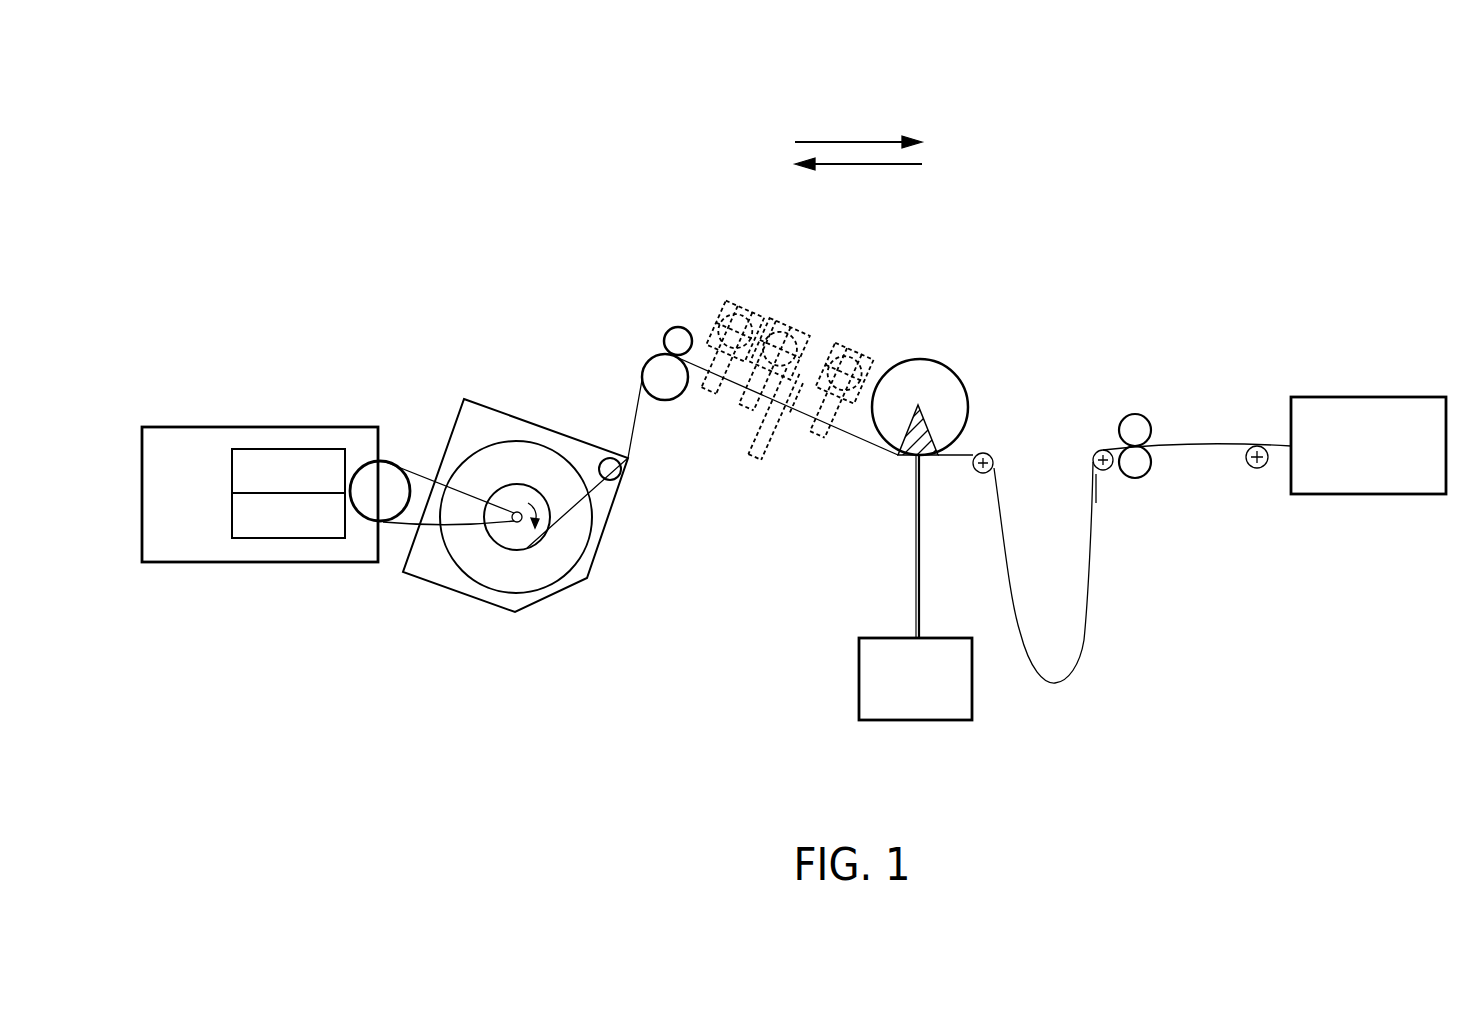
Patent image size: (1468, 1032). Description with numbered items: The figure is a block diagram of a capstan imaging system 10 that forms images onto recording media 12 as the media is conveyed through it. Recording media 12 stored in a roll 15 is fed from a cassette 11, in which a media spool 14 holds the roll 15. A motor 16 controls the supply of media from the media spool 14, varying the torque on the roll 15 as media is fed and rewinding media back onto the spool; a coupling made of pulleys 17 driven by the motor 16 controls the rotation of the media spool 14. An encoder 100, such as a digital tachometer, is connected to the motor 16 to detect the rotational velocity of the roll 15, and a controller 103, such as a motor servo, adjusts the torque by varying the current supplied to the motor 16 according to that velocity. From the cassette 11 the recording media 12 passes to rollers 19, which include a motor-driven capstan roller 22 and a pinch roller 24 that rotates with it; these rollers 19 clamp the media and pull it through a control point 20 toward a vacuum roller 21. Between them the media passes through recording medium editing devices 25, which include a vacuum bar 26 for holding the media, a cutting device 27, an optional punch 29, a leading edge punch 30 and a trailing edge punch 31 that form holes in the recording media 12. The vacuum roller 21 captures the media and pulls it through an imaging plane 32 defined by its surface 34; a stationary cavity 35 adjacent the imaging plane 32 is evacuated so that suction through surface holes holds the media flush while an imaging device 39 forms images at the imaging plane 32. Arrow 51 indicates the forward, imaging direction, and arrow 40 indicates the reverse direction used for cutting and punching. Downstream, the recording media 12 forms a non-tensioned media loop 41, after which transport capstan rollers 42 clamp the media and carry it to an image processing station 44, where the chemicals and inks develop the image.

The imaging system 10 is at (1112, 280).
The cassette 11 is at (490, 420).
The recording media 12 is at (633, 420).
The media spool 14 is at (515, 520).
The roll 15 is at (518, 548).
The motor 16 is at (170, 552).
The pulleys 17 is at (393, 461).
The rollers 19 is at (656, 374).
The control point 20 is at (664, 357).
The vacuum roller 21 is at (930, 368).
The capstan roller 22 is at (684, 395).
The pinch roller 24 is at (684, 328).
The recording medium editing devices 25 is at (922, 302).
The vacuum bar 26 is at (757, 456).
The cutting device 27 is at (812, 358).
The optional punch 29 is at (743, 298).
The leading edge punch 30 is at (778, 322).
The trailing edge punch 31 is at (843, 347).
The imaging plane 32 is at (906, 458).
The surface 34 is at (963, 431).
The stationary cavity 35 is at (913, 437).
The imaging device 39 is at (920, 721).
The arrow 40 is at (862, 166).
The media loop 41 is at (1058, 683).
The transport capstan rollers 42 is at (1106, 418).
The image processing station 44 is at (1405, 403).
The arrow 51 is at (850, 141).
The encoder 100 is at (282, 530).
The controller 103 is at (317, 458).